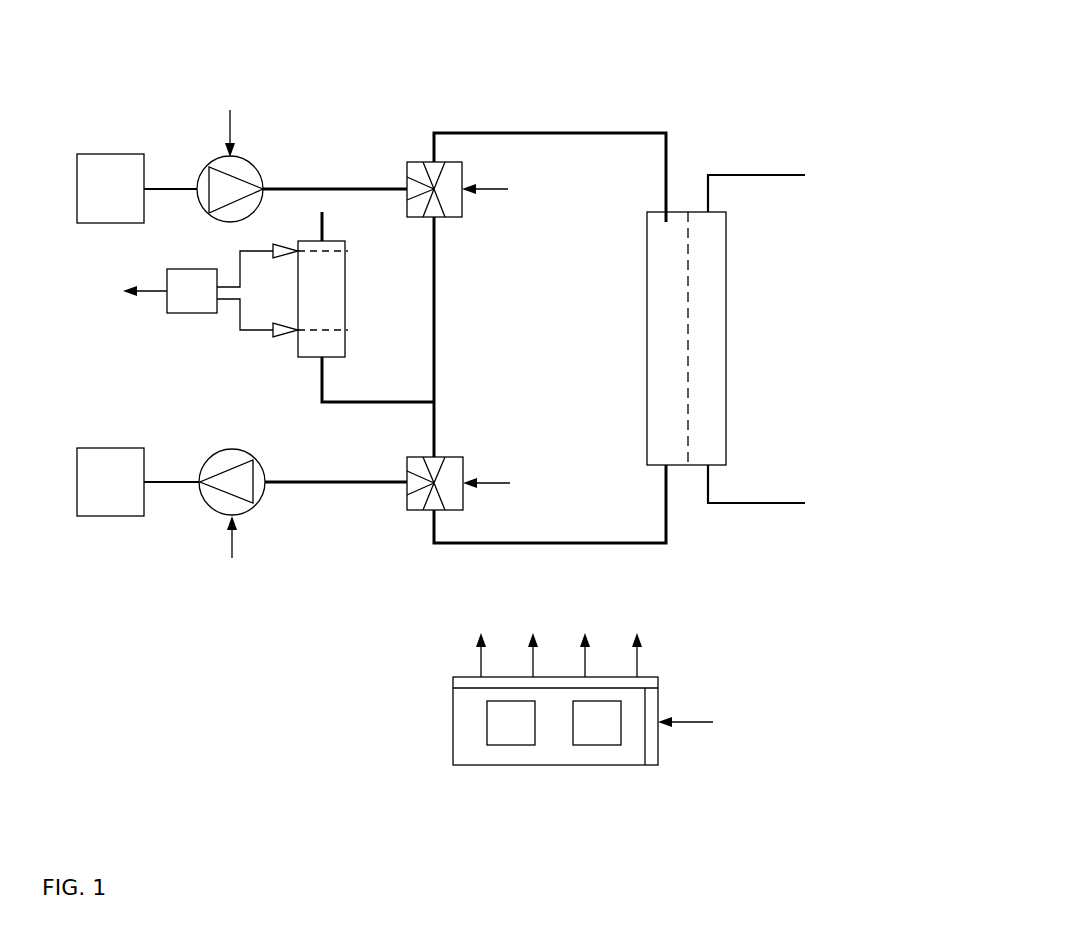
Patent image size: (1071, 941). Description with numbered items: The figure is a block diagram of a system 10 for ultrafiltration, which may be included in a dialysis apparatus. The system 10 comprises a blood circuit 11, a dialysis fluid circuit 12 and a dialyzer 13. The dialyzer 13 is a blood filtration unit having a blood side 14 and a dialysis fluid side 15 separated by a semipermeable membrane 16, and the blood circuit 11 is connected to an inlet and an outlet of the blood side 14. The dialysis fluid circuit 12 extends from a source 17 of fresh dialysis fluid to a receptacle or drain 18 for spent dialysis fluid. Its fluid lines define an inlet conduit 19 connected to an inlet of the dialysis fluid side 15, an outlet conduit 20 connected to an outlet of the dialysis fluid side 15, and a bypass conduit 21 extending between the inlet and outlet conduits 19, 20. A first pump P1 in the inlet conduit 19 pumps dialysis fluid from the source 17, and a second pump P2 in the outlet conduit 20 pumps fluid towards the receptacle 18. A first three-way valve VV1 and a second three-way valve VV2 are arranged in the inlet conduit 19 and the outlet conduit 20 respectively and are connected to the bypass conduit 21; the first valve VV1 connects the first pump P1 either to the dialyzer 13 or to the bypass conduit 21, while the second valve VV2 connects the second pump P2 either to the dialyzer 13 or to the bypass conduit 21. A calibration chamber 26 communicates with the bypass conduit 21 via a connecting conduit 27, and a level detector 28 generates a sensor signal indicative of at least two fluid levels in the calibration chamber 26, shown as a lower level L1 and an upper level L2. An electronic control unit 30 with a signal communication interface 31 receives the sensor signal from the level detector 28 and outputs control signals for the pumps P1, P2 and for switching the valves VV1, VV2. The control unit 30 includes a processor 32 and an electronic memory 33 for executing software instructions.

The system for ultrafiltration 10 is at (688, 82).
The blood circuit 11 is at (740, 576).
The dialysis fluid circuit 12 is at (307, 630).
The dialyzer 13 is at (647, 263).
The blood side 14 is at (708, 363).
The dialysis fluid side 15 is at (665, 364).
The semipermeable membrane 16 is at (688, 270).
The source of fresh dialysis fluid 17 is at (118, 154).
The receptacle or drain 18 is at (119, 516).
The inlet conduit 19 is at (340, 188).
The outlet conduit 20 is at (345, 485).
The bypass conduit 21 is at (434, 318).
The calibration chamber 26 is at (345, 284).
The connecting conduit 27 is at (370, 405).
The level detector 28 is at (182, 313).
The electronic control unit 30 is at (560, 711).
The signal communication interface 31 is at (650, 682).
The processor 32 is at (512, 745).
The electronic memory 33 is at (593, 745).
The first pump P1 is at (245, 160).
The second pump P2 is at (250, 510).
The first three-way valve VV1 is at (462, 205).
The second three-way valve VV2 is at (463, 465).
The lower level L1 is at (345, 298).
The upper level L2 is at (328, 251).